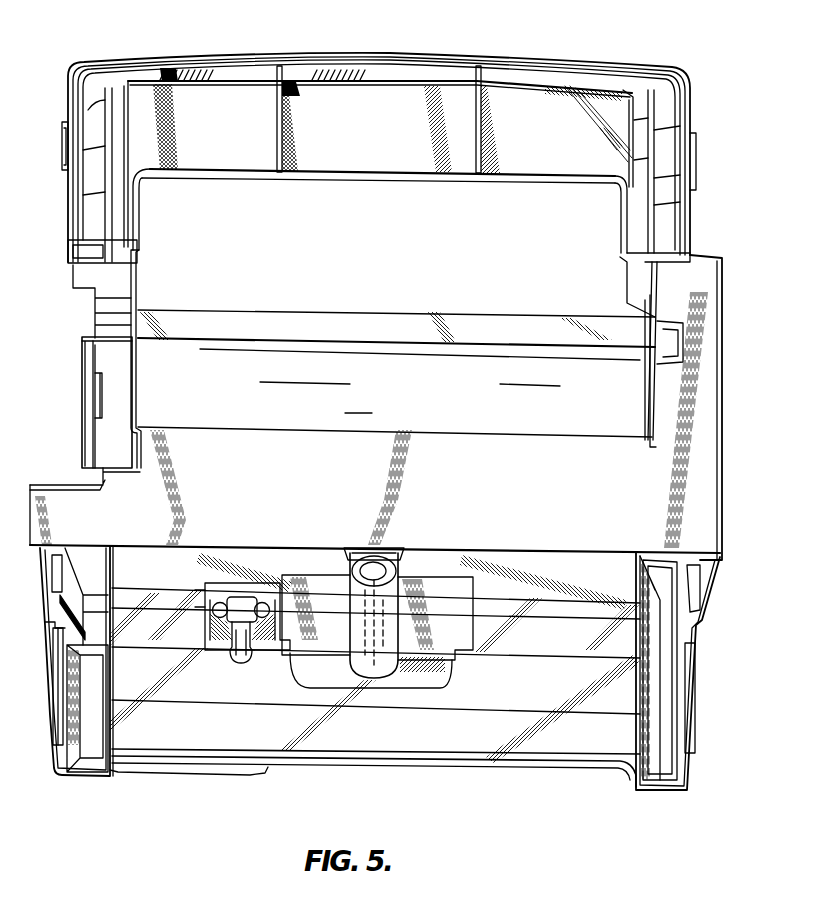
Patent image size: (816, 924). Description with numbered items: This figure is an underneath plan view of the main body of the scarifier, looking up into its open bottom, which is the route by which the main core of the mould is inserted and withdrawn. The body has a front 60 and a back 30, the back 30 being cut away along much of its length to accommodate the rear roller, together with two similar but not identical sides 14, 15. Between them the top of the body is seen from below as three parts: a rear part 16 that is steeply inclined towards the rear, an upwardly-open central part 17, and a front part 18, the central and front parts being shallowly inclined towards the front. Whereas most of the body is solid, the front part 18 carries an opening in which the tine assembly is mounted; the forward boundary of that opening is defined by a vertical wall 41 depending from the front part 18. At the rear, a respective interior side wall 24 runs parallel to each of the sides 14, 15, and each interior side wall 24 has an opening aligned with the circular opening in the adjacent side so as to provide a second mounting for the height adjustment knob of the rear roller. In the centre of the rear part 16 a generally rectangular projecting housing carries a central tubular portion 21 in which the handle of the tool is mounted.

The side 14 is at (693, 248).
The side 15 is at (130, 332).
The rear part 16 is at (450, 727).
The central part 17 is at (634, 524).
The front part 18 is at (531, 112).
The central tubular portion 21 is at (380, 630).
The interior side wall 24 is at (110, 710).
The back 30 is at (340, 770).
The vertical wall 41 is at (536, 183).
The front 60 is at (381, 55).